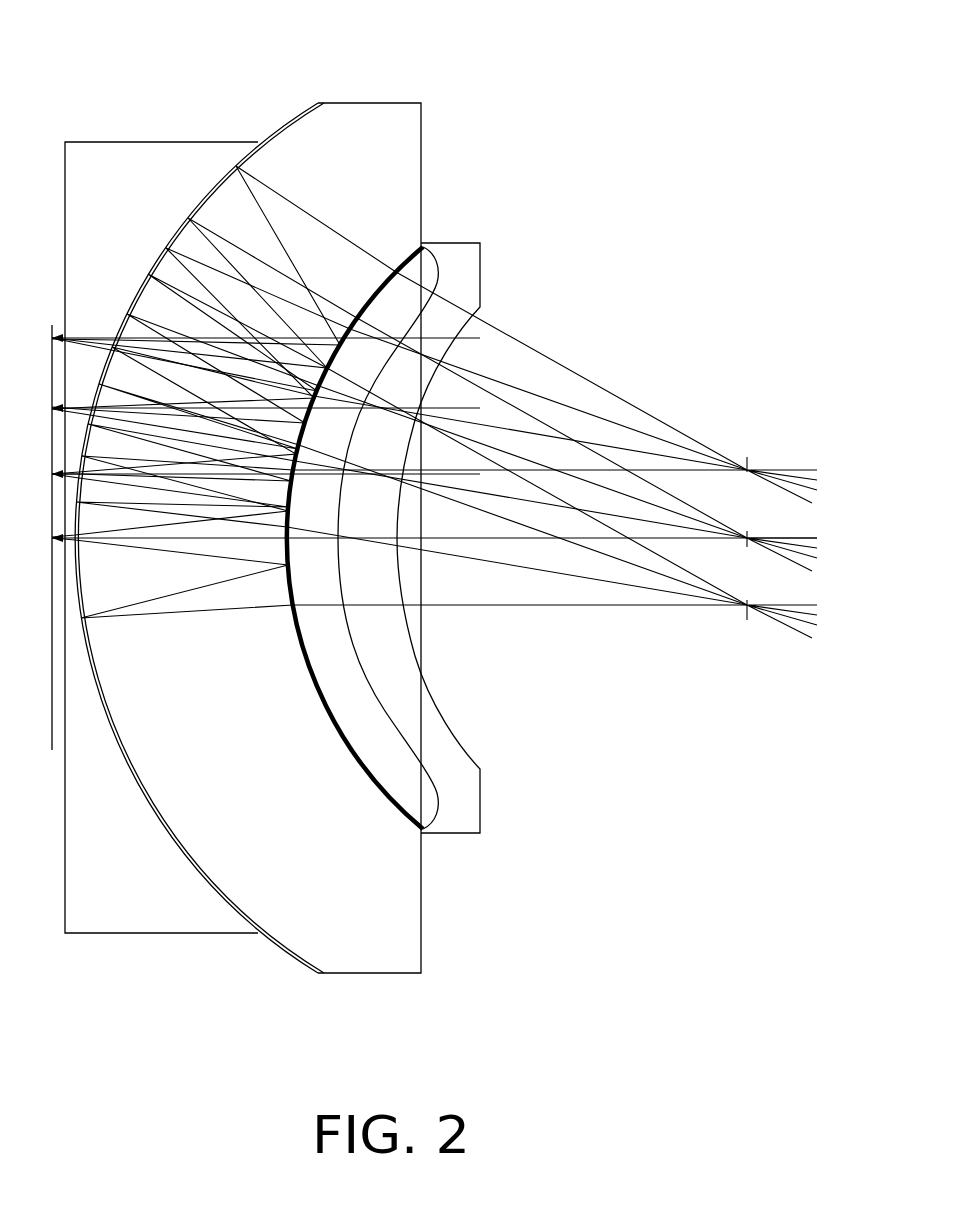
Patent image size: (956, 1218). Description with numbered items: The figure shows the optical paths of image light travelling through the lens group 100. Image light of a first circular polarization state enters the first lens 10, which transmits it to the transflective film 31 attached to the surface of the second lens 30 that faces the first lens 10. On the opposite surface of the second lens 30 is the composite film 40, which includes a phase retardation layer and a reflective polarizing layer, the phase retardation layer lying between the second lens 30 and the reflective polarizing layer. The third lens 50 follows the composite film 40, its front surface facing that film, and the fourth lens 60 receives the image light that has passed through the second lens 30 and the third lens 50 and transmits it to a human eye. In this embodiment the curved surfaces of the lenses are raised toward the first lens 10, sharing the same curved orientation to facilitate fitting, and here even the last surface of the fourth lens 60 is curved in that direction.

The lens group 100 is at (458, 43).
The first lens 10 is at (108, 920).
The second lens 30 is at (248, 570).
The transflective film 31 is at (220, 902).
The composite film 40 is at (405, 822).
The third lens 50 is at (425, 792).
The fourth lens 60 is at (437, 737).